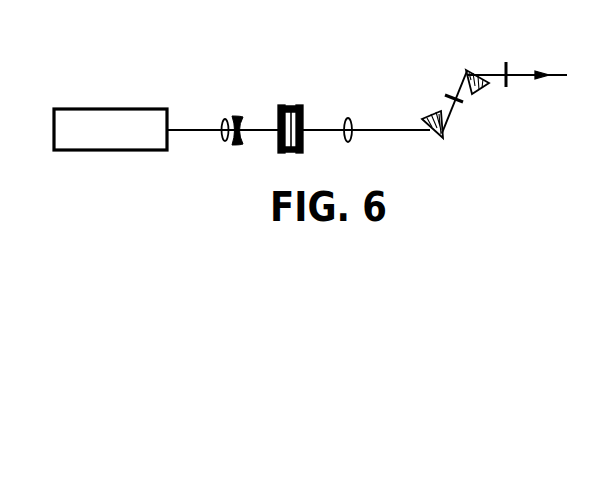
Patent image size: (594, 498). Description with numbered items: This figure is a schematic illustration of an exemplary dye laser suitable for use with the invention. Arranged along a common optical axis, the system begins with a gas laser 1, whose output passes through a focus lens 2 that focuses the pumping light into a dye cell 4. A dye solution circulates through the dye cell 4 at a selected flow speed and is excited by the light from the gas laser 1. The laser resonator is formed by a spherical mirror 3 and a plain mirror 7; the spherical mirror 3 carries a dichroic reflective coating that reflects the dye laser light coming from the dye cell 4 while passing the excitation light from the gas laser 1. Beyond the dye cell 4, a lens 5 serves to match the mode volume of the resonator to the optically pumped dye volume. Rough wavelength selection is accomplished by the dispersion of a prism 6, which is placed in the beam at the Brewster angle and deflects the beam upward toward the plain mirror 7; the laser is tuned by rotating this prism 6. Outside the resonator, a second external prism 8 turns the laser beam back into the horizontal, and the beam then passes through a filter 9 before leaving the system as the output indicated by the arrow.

The gas laser 1 is at (131, 121).
The focus lens 2 is at (223, 114).
The spherical mirror 3 is at (238, 116).
The dye cell 4 is at (293, 106).
The lens 5 is at (349, 118).
The prism 6 is at (425, 114).
The plain mirror 7 is at (458, 104).
The external prism 8 is at (484, 89).
The filter 9 is at (514, 82).